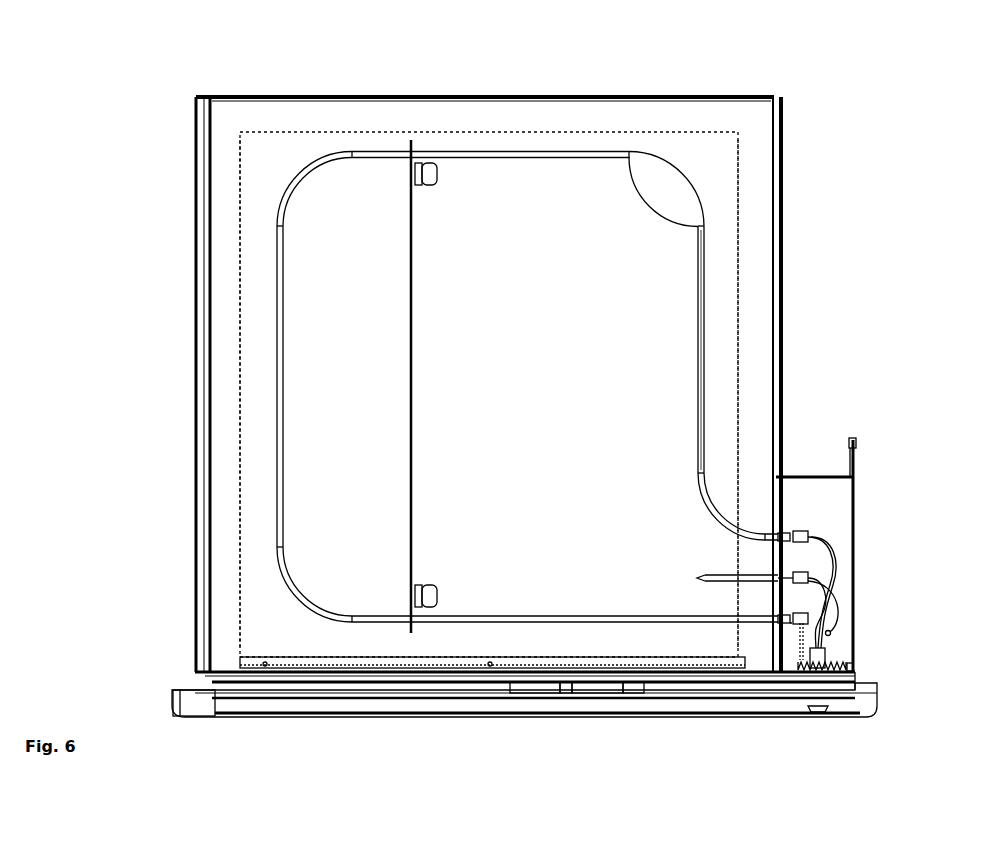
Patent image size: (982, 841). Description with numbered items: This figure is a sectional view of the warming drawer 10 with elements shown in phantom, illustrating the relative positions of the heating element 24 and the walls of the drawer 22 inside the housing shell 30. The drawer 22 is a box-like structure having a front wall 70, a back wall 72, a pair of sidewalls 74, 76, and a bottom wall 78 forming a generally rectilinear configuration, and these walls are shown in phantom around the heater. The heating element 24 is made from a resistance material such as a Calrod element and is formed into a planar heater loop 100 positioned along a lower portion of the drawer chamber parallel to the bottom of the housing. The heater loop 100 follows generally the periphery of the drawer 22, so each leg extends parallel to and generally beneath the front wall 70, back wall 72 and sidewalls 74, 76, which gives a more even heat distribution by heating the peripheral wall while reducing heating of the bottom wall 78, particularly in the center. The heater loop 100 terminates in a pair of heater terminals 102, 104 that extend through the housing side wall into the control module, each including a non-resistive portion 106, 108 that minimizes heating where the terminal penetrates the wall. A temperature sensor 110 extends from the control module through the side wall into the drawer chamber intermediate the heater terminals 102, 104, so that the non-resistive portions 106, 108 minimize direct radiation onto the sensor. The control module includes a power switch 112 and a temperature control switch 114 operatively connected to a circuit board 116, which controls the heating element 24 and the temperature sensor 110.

The warming drawer 10 is at (853, 124).
The drawer 22 is at (364, 719).
The heating element 24 is at (665, 153).
The housing shell 30 is at (197, 100).
The front wall 70 is at (296, 660).
The back wall 72 is at (342, 134).
The sidewall 74 is at (730, 265).
The sidewall 76 is at (240, 258).
The bottom wall 78 is at (270, 187).
The heater loop 100 is at (704, 340).
The heater terminal 102 is at (790, 626).
The heater terminal 104 is at (790, 528).
The non-resistive portion 106 is at (657, 625).
The non-resistive portion 108 is at (717, 503).
The temperature sensor 110 is at (727, 583).
The power switch 112 is at (818, 657).
The temperature control switch 114 is at (852, 668).
The circuit board 116 is at (826, 662).